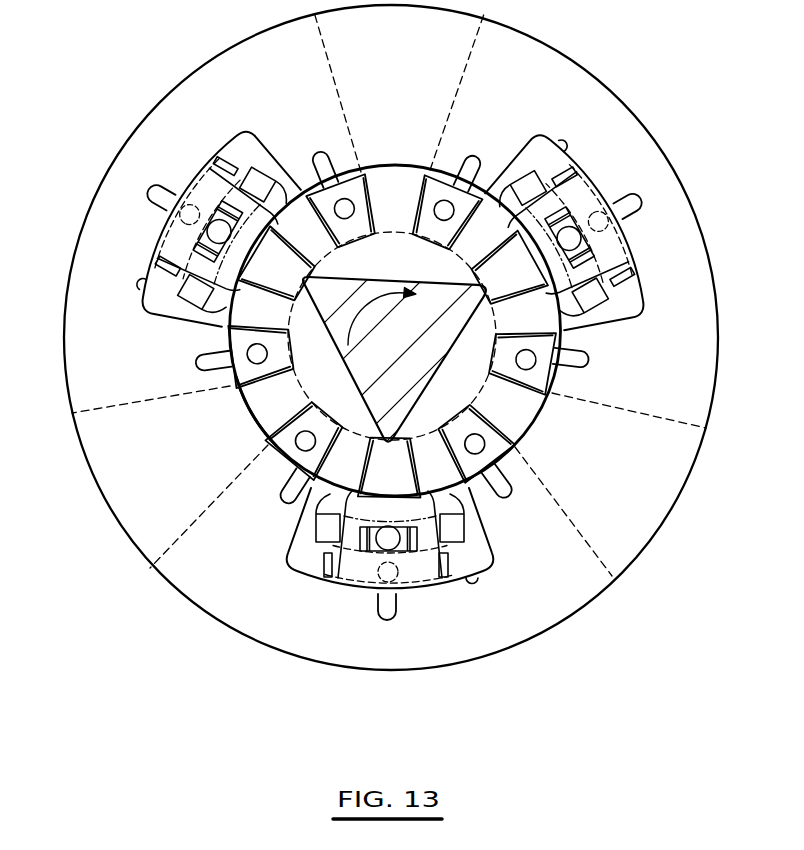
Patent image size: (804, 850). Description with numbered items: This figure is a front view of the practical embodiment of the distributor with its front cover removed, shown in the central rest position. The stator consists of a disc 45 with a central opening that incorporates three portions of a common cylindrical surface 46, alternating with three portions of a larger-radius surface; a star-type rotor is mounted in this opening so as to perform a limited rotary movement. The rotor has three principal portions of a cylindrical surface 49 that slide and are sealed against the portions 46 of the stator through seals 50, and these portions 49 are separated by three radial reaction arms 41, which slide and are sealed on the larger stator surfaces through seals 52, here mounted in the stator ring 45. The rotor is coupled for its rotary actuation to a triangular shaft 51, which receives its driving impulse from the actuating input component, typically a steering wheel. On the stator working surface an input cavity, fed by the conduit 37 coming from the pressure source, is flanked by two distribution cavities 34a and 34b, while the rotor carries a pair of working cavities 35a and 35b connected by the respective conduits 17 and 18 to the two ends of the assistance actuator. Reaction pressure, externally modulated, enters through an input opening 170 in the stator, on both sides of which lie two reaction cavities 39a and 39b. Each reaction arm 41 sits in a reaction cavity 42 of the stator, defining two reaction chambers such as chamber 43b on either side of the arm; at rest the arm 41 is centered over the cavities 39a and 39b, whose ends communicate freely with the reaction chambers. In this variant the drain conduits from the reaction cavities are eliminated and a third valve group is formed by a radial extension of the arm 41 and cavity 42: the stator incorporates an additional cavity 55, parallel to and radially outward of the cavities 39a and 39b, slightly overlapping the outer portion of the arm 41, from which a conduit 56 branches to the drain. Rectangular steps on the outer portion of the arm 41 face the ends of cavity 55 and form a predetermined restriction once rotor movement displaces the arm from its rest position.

The disc 45 is at (82, 372).
The cylindrical surface portions 46 is at (382, 166).
The principal portions of a cylindrical surface 49 is at (240, 430).
The conduit 37 is at (657, 420).
The working cavity 35a is at (265, 455).
The working cavity 35b is at (225, 390).
The triangular shaft 51 is at (397, 279).
The conduit 17 is at (312, 444).
The conduit 18 is at (258, 347).
The input opening 170 is at (388, 527).
The reaction arm 41 is at (218, 162).
The reaction cavity 39a is at (200, 305).
The reaction cavity 39b is at (270, 162).
The conduit 56 is at (612, 225).
The reaction chamber 43b is at (302, 578).
The additional cavity 55 is at (640, 301).
The seals 52 is at (395, 612).
The reaction cavity 42 is at (248, 130).
The seals 50 is at (322, 158).
The distribution cavity 34a is at (282, 492).
The distribution cavity 34b is at (205, 353).